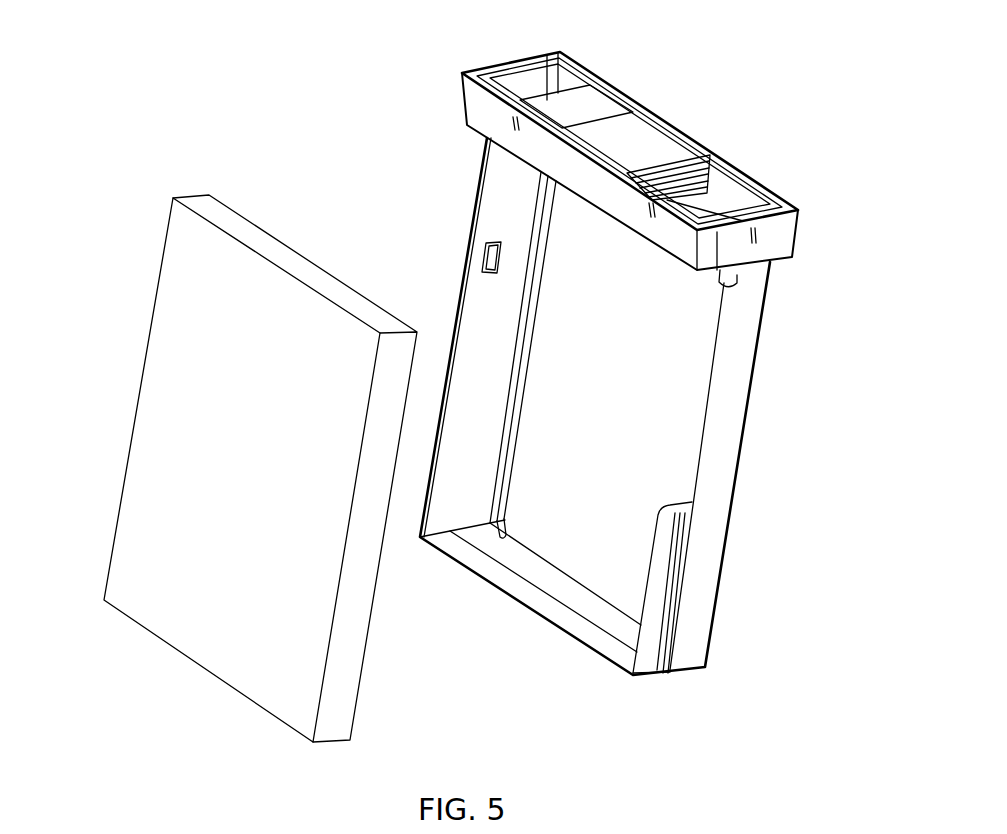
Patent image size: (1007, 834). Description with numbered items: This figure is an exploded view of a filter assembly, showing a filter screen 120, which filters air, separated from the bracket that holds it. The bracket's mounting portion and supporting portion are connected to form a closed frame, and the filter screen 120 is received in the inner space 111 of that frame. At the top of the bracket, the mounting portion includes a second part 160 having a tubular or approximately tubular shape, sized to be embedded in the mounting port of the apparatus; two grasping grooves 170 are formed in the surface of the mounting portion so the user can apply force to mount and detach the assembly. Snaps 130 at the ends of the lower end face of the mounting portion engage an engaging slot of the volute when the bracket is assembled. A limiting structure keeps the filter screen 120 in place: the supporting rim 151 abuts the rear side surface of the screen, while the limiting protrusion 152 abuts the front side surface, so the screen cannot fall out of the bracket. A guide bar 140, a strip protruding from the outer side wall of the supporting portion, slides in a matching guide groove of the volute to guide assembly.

The inner space 111 is at (628, 427).
The filter screen 120 is at (190, 388).
The snap 130 is at (737, 281).
The guide bar 140 is at (680, 603).
The supporting rim 151 is at (498, 520).
The limiting protrusion 152 is at (483, 263).
The second part 160 is at (487, 116).
The grasping groove 170 is at (565, 93).